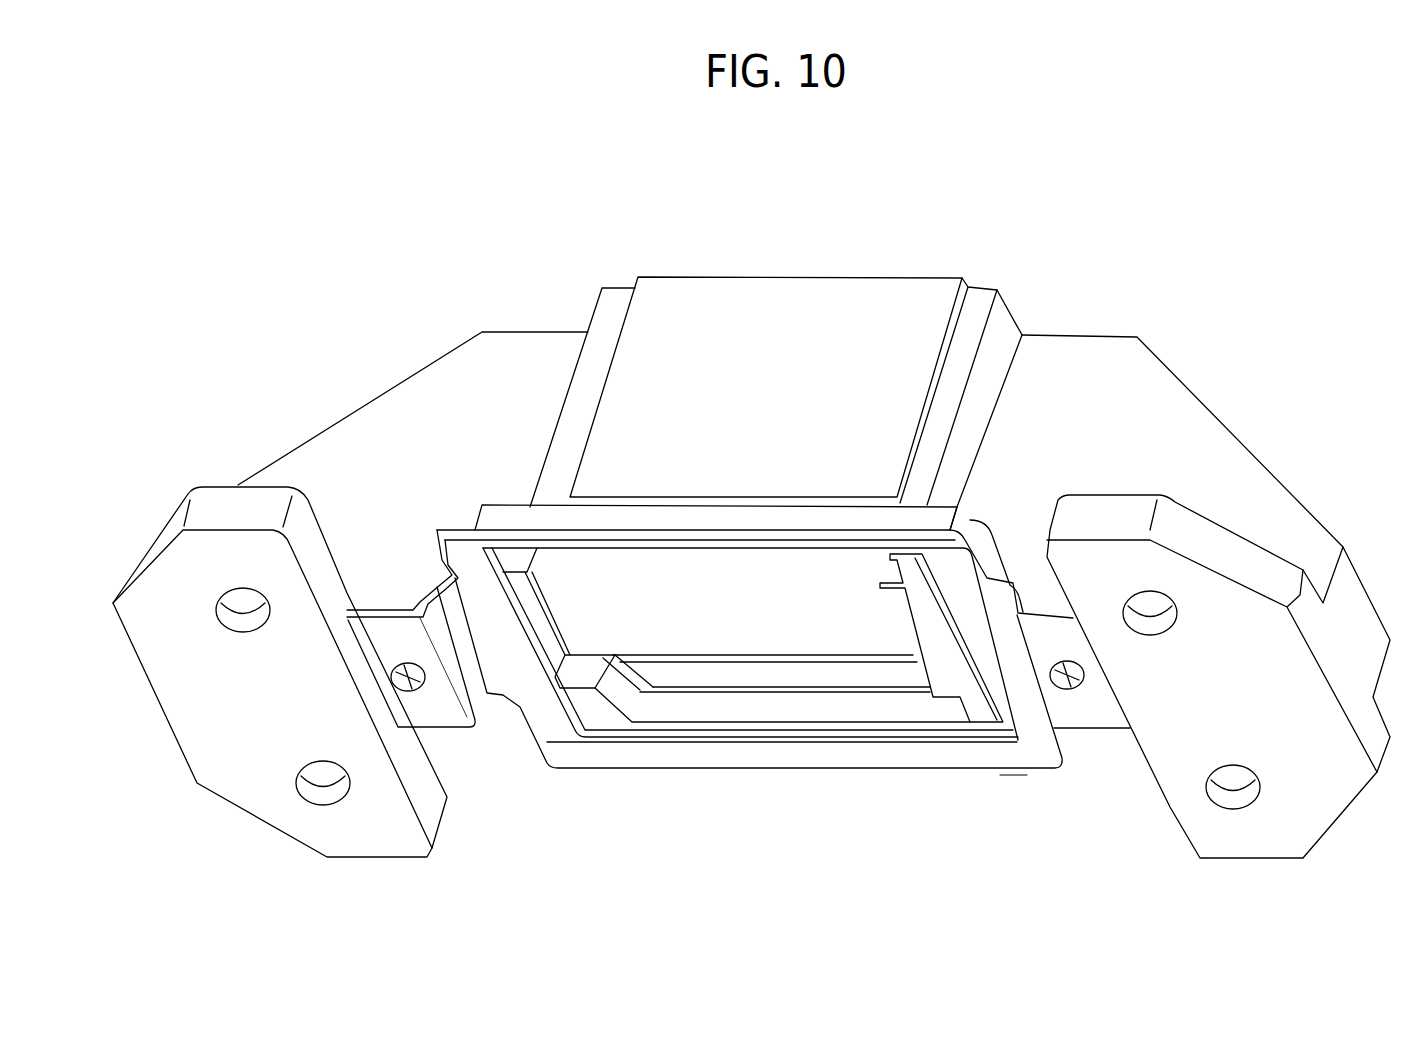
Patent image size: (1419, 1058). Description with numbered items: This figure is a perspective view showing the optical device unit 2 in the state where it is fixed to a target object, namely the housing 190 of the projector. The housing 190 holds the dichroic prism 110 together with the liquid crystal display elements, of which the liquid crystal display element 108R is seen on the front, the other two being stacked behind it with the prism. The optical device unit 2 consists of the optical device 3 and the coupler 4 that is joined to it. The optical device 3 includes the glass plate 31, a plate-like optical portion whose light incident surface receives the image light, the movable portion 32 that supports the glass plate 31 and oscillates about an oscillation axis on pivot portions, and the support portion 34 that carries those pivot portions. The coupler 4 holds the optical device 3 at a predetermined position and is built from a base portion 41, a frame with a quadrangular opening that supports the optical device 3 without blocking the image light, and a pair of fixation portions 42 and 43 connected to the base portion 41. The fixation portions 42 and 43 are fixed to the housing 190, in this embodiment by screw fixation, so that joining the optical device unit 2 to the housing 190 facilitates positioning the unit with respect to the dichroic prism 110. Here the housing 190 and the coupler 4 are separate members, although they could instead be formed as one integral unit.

The optical device unit 2 is at (906, 782).
The optical device 3 is at (710, 564).
The coupler 4 is at (738, 683).
The glass plate 31 is at (765, 623).
The movable portion 32 is at (613, 627).
The support portion 34 is at (670, 710).
The base portion 41 is at (832, 753).
The fixation portion 42 is at (1095, 717).
The fixation portion 43 is at (440, 708).
The liquid crystal display element 108R is at (752, 303).
The dichroic prism 110 is at (845, 430).
The housing 190 is at (1167, 412).